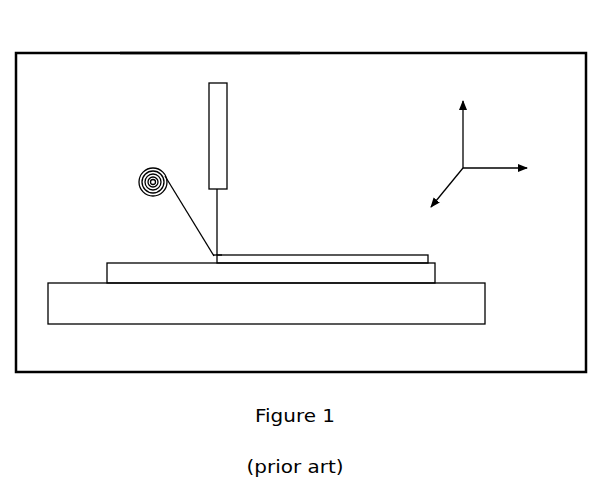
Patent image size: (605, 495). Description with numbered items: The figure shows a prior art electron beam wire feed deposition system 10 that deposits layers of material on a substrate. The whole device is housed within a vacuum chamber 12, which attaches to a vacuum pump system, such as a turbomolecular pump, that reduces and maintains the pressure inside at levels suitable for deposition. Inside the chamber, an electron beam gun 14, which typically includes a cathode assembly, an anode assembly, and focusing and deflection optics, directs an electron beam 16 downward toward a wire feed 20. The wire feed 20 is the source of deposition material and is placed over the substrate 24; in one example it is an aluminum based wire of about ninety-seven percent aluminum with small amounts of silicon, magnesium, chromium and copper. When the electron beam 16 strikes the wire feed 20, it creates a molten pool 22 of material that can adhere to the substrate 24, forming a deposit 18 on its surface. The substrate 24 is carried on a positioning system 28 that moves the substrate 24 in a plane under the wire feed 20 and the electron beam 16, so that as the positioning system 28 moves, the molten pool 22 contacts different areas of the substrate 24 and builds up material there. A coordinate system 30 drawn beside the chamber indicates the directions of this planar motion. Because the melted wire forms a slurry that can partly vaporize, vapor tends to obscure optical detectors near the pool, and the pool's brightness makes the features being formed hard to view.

The electron beam wire feed deposition system 10 is at (203, 51).
The vacuum chamber 12 is at (301, 201).
The electron beam gun 14 is at (230, 106).
The electron beam 16 is at (220, 213).
The deposit 18 is at (431, 256).
The wire feed 20 is at (149, 166).
The molten pool 22 is at (211, 254).
The substrate 24 is at (105, 270).
The positioning system 28 is at (220, 326).
The coordinate system 30 is at (466, 174).